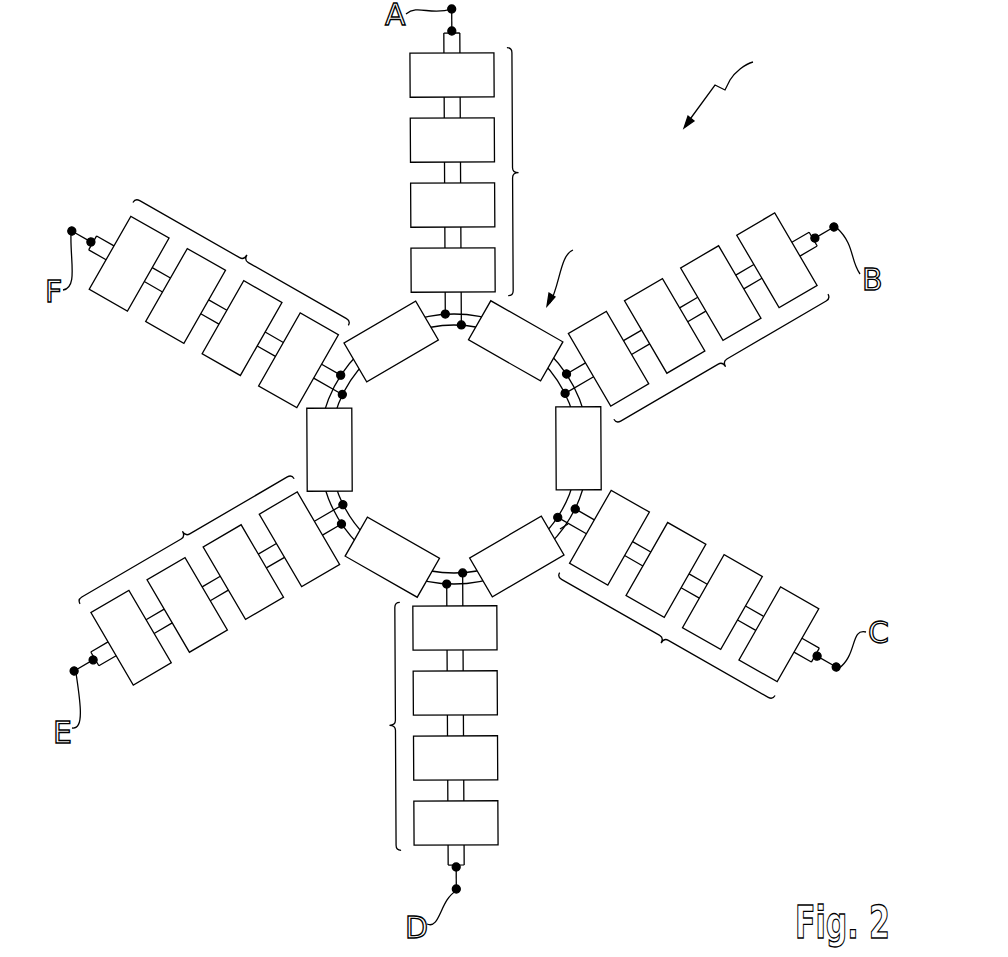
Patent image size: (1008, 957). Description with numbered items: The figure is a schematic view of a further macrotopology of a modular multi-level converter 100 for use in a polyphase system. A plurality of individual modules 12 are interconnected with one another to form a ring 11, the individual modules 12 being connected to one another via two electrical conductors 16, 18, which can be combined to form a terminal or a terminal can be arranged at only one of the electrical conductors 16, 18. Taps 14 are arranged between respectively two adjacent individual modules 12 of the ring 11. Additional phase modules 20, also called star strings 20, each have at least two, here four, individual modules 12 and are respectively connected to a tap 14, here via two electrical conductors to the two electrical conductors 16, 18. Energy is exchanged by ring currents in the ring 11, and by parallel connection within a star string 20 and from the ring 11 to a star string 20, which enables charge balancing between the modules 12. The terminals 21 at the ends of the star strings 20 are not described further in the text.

The modular multi-level converter 100 is at (738, 86).
The ring 11 is at (573, 269).
The individual module 12 is at (404, 533).
The tap 14 is at (461, 328).
The electrical conductor 16 is at (558, 514).
The electrical conductor 18 is at (568, 532).
The additional phase module 20 is at (454, 449).
The terminal 21 is at (455, 9).